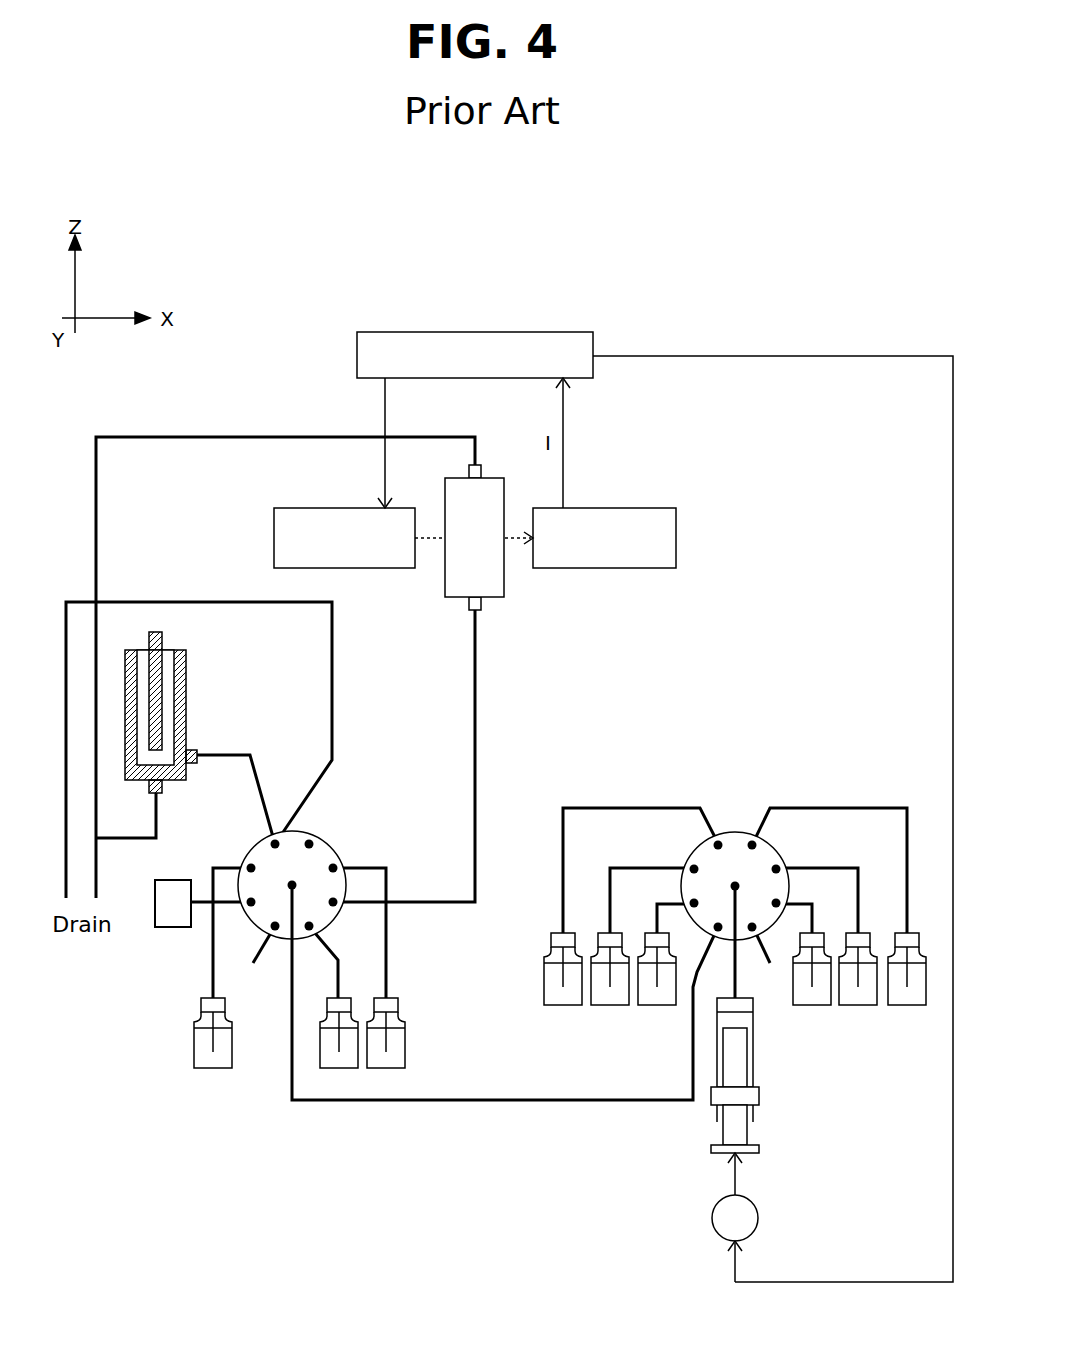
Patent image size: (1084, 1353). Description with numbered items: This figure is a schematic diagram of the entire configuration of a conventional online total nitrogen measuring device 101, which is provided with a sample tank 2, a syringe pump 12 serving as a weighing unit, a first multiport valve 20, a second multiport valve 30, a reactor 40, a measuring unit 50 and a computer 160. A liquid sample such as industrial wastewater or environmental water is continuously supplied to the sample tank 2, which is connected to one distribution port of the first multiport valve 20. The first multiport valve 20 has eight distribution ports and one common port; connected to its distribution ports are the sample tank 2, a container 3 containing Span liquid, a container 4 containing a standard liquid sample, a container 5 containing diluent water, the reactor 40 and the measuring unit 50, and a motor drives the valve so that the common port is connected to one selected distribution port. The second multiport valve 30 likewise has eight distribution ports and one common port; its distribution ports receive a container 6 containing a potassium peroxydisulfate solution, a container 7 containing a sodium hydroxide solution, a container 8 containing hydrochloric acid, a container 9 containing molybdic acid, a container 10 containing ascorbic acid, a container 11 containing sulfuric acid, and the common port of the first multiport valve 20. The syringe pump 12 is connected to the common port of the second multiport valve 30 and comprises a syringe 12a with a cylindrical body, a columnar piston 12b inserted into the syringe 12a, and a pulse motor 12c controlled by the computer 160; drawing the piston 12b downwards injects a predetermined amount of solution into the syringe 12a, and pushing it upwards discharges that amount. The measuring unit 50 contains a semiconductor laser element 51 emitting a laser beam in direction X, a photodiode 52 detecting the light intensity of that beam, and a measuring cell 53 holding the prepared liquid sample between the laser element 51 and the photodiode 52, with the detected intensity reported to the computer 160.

The online total nitrogen measuring device 101 is at (474, 277).
The computer 160 is at (356, 350).
The measuring unit 50 is at (648, 592).
The semiconductor laser element 51 is at (272, 537).
The photodiode 52 is at (677, 535).
The measuring cell 53 is at (504, 580).
The reactor 40 is at (187, 691).
The first multiport valve 20 is at (332, 845).
The second multiport valve 30 is at (736, 830).
The sample tank 2 is at (173, 930).
The container containing Span liquid 3 is at (213, 1068).
The container containing standard liquid sample 4 is at (340, 1068).
The container containing diluent water 5 is at (386, 1068).
The container containing potassium peroxydisulfate solution 6 is at (563, 1005).
The container containing sodium hydroxide solution 7 is at (610, 1005).
The container containing hydrochloric acid 8 is at (657, 1005).
The container containing molybdic acid 9 is at (812, 1005).
The container containing ascorbic acid 10 is at (858, 1005).
The container containing sulfuric acid 11 is at (907, 1005).
The syringe pump 12 is at (862, 1098).
The syringe 12a is at (753, 1068).
The piston 12b is at (747, 1133).
The pulse motor 12c is at (758, 1210).